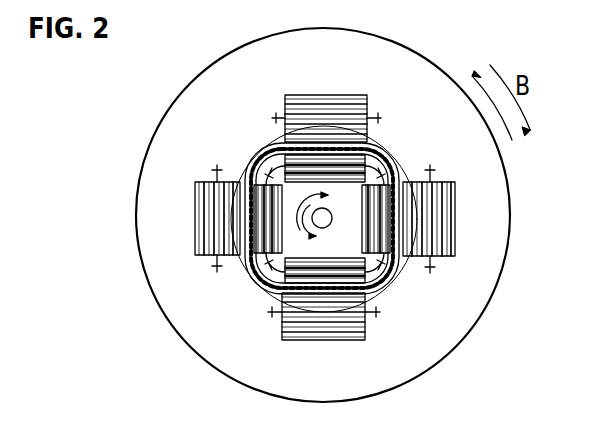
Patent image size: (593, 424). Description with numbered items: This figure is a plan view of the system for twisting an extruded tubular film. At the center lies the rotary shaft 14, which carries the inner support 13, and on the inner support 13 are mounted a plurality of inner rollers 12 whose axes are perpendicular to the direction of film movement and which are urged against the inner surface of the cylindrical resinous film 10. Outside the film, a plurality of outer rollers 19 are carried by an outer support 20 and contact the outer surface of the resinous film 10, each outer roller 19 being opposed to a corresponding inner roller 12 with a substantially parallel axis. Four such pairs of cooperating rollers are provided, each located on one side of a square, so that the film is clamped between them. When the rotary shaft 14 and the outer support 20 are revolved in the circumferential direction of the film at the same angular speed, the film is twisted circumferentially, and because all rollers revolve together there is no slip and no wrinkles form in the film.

The cylindrical resinous film 10 is at (258, 287).
The inner rollers 12 is at (288, 160).
The inner support 13 is at (364, 228).
The rotary shaft 14 is at (329, 226).
The outer rollers 19 is at (351, 95).
The outer support 20 is at (477, 322).